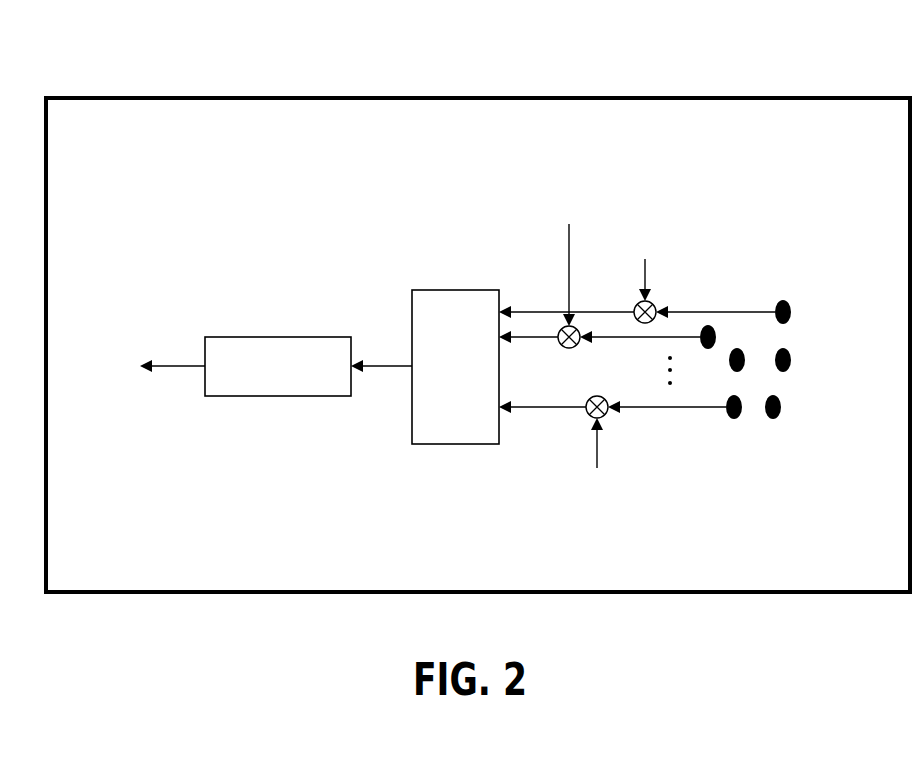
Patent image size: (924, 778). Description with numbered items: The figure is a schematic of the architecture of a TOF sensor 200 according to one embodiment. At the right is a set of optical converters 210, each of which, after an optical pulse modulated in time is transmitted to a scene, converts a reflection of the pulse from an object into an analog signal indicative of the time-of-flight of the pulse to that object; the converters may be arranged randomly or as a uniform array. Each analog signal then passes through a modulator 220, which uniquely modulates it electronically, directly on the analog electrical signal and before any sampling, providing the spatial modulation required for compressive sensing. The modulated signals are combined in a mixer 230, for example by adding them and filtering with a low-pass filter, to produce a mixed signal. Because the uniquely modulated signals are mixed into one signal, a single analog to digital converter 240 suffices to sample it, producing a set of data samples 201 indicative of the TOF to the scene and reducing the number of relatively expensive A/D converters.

The TOF sensor 200 is at (500, 97).
The set of data samples 201 is at (147, 363).
The set of optical converters 210 is at (800, 360).
The modulator 220 is at (567, 323).
The mixer 230 is at (428, 288).
The analog to digital converter 240 is at (270, 336).